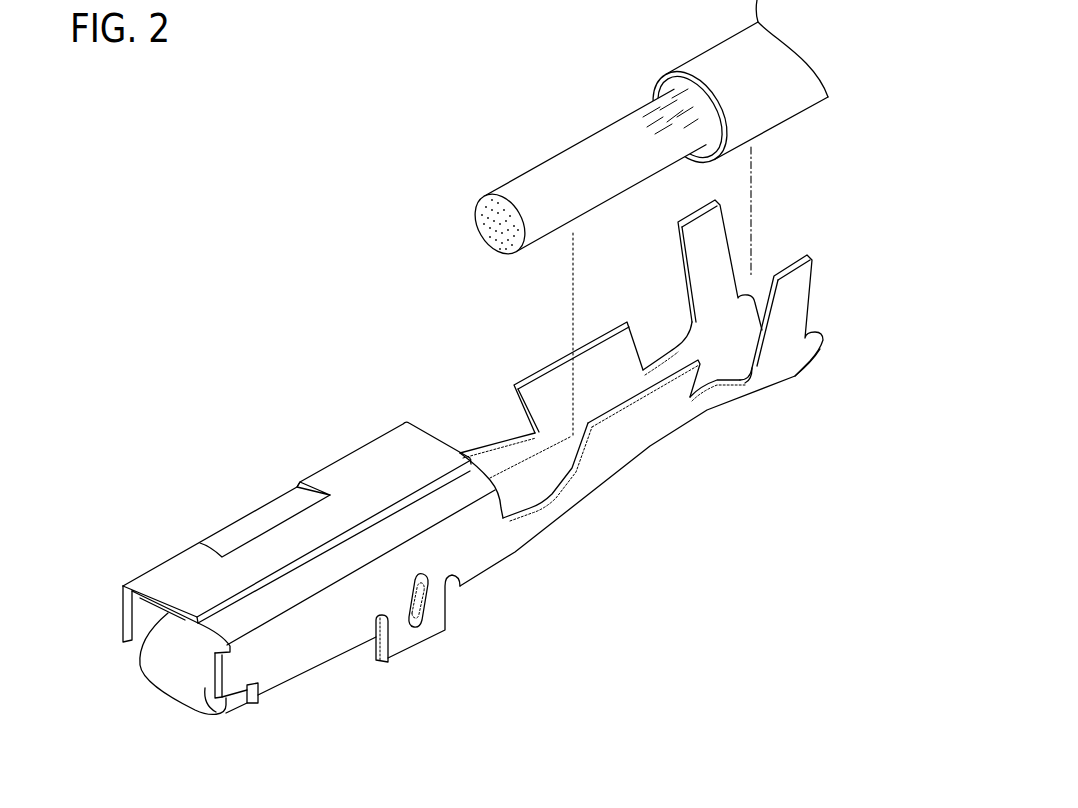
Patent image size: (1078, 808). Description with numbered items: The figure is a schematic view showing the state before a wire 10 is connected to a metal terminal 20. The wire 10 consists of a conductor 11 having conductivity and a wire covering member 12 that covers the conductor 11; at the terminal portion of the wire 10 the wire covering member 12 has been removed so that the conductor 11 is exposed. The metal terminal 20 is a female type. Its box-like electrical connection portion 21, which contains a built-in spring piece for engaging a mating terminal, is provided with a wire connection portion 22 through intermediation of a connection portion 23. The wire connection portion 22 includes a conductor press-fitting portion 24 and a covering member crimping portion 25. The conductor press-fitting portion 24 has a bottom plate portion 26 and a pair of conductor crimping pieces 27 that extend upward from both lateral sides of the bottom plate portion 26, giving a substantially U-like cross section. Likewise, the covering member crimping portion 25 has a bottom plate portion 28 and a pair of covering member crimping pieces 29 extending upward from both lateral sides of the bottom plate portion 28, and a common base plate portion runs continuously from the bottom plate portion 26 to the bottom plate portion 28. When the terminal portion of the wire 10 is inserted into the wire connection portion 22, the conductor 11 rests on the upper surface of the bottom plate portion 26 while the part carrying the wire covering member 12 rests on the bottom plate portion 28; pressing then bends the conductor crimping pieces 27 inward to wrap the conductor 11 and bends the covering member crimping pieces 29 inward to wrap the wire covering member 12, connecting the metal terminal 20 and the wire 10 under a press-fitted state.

The wire 10 is at (659, 218).
The conductor 11 is at (587, 143).
The wire covering member 12 is at (775, 101).
The metal terminal 20 is at (503, 457).
The electrical connection portion 21 is at (193, 563).
The wire connection portion 22 is at (671, 393).
The connection portion 23 is at (555, 507).
The conductor press-fitting portion 24 is at (542, 362).
The covering member crimping portion 25 is at (663, 240).
The bottom plate portion 26 is at (557, 471).
The conductor crimping pieces 27 is at (647, 408).
The bottom plate portion 28 is at (742, 375).
The covering member crimping pieces 29 is at (800, 268).